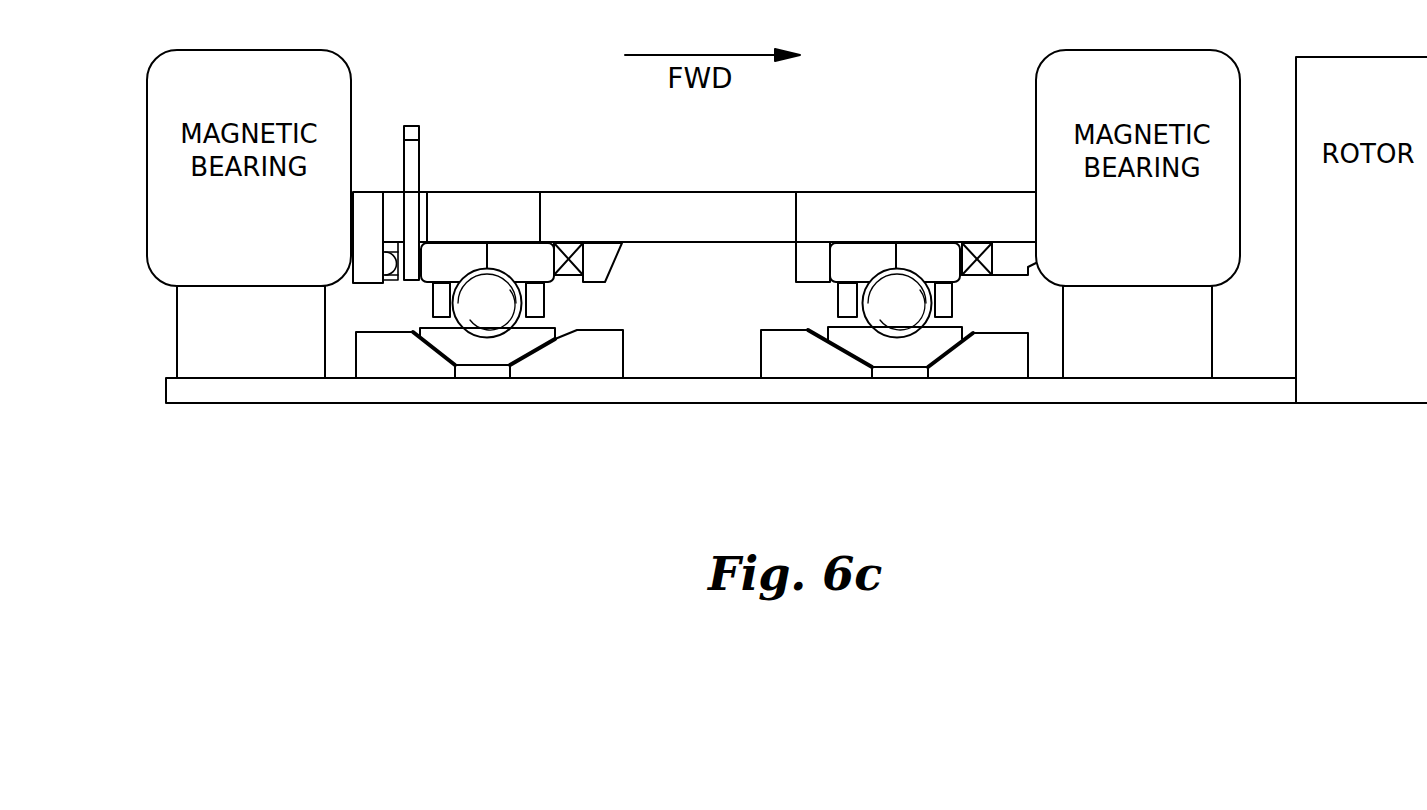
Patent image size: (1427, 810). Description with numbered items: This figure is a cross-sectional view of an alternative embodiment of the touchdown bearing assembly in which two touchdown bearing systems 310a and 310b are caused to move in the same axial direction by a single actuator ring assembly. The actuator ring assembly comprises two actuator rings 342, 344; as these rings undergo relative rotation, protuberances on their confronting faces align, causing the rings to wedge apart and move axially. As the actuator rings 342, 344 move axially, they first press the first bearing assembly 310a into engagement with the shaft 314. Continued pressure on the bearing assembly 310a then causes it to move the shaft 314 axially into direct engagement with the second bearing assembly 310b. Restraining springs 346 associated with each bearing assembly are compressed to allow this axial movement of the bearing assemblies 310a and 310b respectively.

The touchdown bearing system 310a is at (495, 165).
The touchdown bearing system 310b is at (875, 170).
The shaft 314 is at (573, 393).
The actuator ring 342 is at (367, 283).
The actuator ring 344 is at (415, 280).
The restraining spring 346 is at (570, 243).